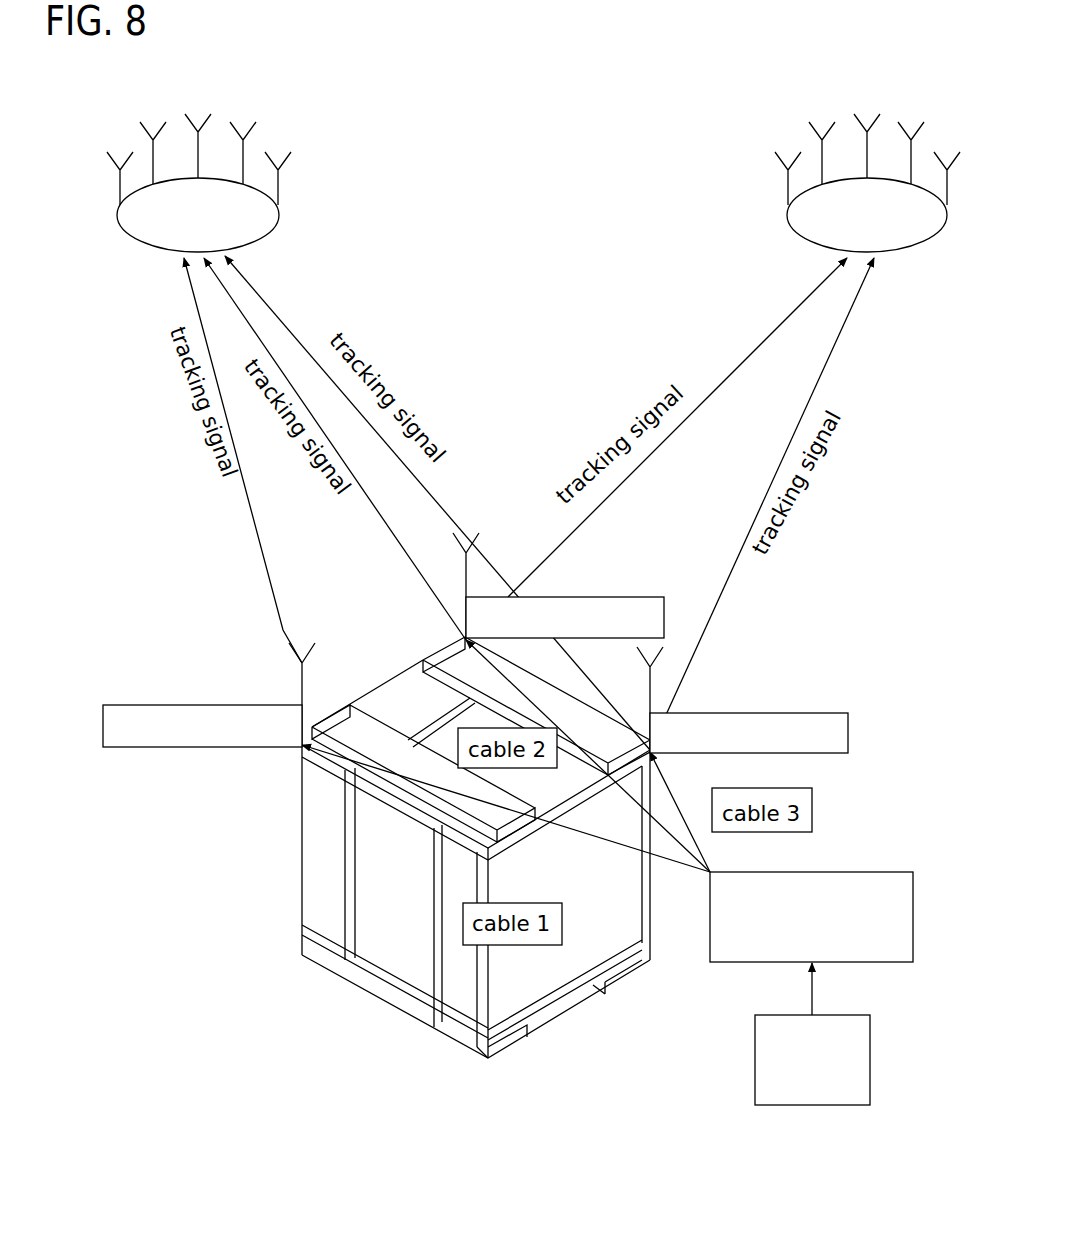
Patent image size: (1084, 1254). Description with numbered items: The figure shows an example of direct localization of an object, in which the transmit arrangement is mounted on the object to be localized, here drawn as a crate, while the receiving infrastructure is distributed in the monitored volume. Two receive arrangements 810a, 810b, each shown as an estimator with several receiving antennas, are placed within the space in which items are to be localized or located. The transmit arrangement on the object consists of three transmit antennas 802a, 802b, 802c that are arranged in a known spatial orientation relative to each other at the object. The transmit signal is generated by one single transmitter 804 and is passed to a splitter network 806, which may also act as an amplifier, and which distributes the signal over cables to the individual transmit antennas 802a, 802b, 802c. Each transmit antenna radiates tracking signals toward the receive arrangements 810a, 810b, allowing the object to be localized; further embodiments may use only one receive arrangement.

The receive arrangement 810a is at (147, 249).
The receive arrangement 810b is at (817, 249).
The transmit antenna 802a is at (648, 692).
The transmit antenna 802b is at (460, 578).
The transmit antenna 802c is at (303, 687).
The transmitter 804 is at (871, 1060).
The splitter network 806 is at (727, 963).